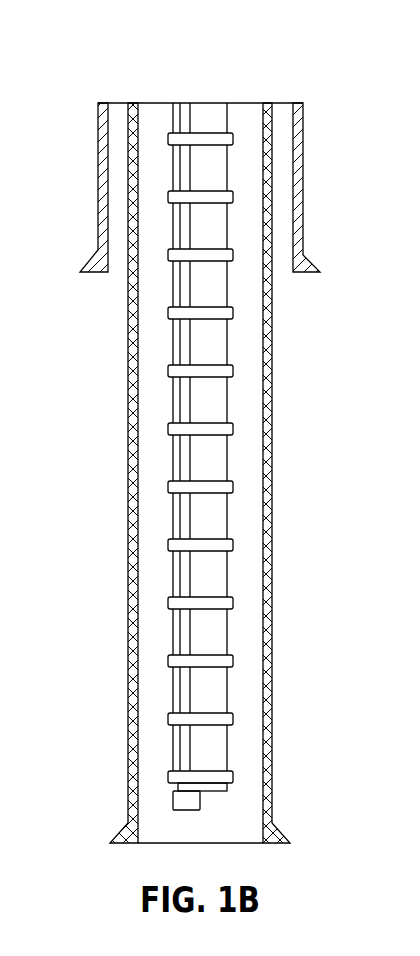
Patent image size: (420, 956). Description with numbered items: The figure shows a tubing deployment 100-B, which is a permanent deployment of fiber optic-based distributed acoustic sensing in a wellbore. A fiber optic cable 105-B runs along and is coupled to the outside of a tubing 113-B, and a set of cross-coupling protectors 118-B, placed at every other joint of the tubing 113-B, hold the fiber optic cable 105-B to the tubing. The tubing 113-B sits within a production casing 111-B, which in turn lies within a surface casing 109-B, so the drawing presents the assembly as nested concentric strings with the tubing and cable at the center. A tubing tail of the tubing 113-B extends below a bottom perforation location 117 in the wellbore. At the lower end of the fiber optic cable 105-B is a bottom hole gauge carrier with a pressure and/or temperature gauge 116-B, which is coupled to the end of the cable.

The tubing deployment 100-B is at (126, 70).
The surface casing 109-B is at (306, 178).
The production casing 111-B is at (274, 325).
The fiber optic cable 105-B is at (176, 515).
The tubing 113-B is at (173, 573).
The bottom perforation location 117 is at (229, 628).
The cross-coupling protectors 118-B is at (166, 428).
The bottom hole gauge carrier with PT gauge 116-B is at (171, 799).